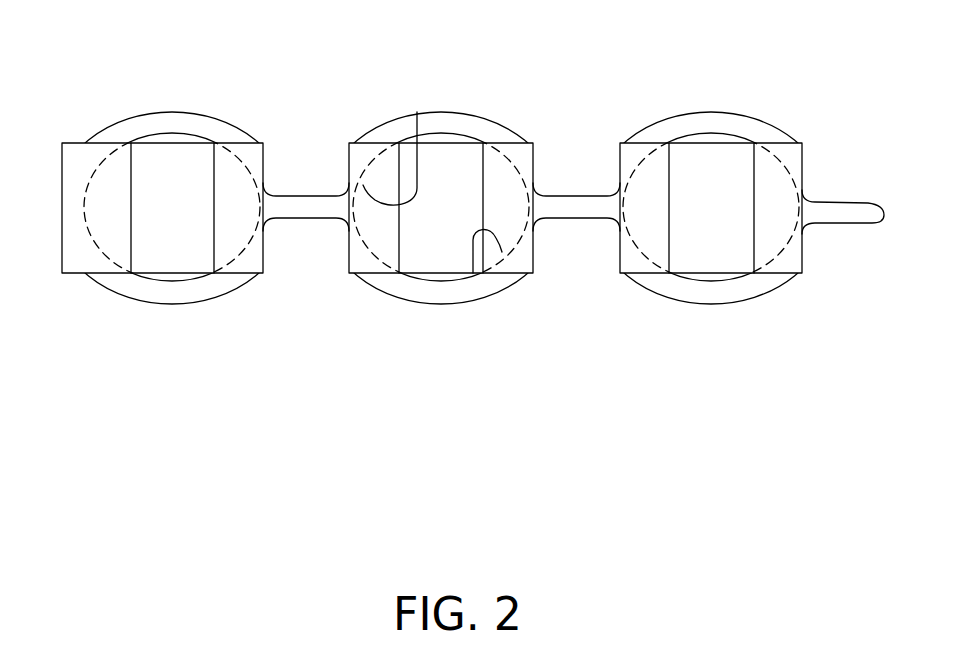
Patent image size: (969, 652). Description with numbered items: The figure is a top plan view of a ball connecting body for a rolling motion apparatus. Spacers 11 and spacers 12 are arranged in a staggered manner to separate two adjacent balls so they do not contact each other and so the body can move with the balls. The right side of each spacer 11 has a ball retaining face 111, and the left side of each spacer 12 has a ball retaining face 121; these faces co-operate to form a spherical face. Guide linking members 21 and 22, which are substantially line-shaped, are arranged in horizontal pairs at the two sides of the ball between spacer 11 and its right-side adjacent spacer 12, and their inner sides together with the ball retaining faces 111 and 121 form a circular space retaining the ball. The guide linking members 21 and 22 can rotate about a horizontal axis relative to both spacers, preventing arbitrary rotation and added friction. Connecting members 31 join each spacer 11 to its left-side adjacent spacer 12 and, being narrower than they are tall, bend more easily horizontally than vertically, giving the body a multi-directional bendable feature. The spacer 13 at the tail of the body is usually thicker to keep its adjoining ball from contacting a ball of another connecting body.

The spacer 11 is at (360, 157).
The spacer 12 is at (260, 157).
The spacer 13 is at (73, 152).
The ball retaining face 111 is at (417, 112).
The ball retaining face 121 is at (473, 273).
The guide linking member 21 is at (173, 122).
The guide linking member 22 is at (175, 297).
The connecting member 31 is at (302, 210).